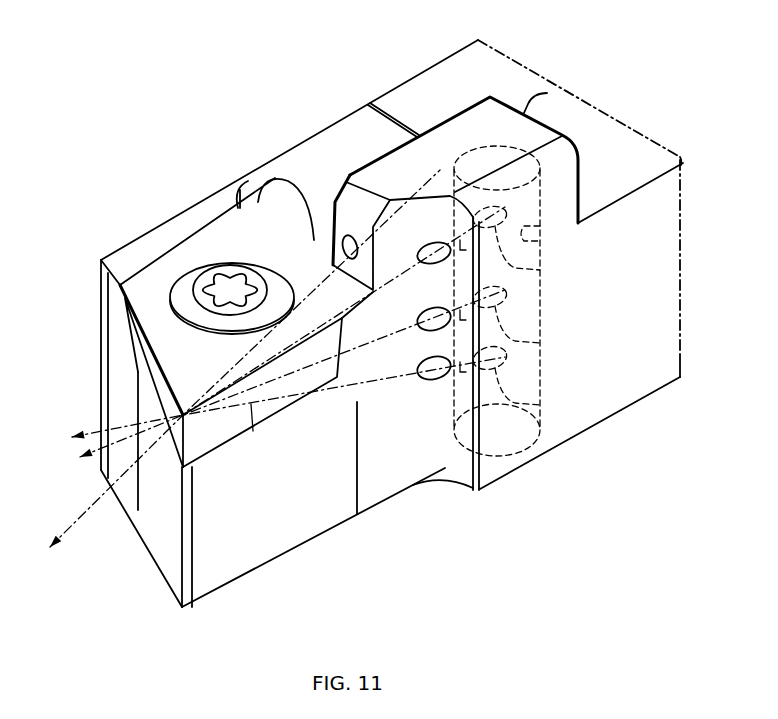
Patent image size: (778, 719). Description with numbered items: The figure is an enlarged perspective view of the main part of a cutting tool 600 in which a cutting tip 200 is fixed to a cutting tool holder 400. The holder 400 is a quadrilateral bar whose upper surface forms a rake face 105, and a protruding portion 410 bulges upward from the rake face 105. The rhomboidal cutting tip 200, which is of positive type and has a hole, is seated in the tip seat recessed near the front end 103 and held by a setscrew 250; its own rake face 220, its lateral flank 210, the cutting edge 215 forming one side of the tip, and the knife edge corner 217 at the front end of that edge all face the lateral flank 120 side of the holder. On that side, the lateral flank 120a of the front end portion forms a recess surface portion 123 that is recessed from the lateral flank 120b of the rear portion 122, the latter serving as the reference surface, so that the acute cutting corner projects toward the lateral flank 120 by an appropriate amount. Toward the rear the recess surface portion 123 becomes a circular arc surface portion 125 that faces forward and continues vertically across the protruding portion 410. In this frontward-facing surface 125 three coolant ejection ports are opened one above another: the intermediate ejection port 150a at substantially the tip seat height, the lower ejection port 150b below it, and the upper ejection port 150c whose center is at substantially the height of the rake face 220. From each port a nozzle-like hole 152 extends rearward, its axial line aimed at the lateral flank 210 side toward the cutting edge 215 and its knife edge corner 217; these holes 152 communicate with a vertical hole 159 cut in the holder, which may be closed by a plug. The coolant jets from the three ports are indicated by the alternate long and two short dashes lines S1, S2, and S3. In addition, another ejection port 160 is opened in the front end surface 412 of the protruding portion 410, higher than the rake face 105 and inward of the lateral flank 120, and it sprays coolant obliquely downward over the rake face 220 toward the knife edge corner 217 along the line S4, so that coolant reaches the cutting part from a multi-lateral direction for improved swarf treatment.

The cutting tool 600 is at (138, 124).
The cutting tool holder 400 is at (430, 68).
The protruding portion 410 is at (547, 93).
The rake face 105 is at (350, 135).
The front end surface 412 is at (338, 222).
The circular arc surface portion 125 is at (452, 200).
The upper ejection port 150c is at (397, 250).
The cutting tip 200 is at (170, 278).
The setscrew 250 is at (235, 260).
The ejection port 160 is at (343, 248).
The rake face 220 is at (172, 356).
The cutting edge 215 is at (222, 380).
The knife edge corner 217 is at (178, 403).
The vertical hole 159 is at (542, 242).
The nozzle-like hole 152 is at (540, 270).
The rear portion 122 is at (677, 270).
The lateral flank 120 is at (638, 400).
The lateral flank of the rear portion 120b is at (563, 441).
The lateral flank of the front end portion 120a is at (227, 562).
The recess surface portion 123 is at (303, 520).
The front end 103 is at (173, 558).
The lateral flank 210 is at (222, 432).
The intermediate ejection port 150a is at (417, 330).
The lower ejection port 150b is at (430, 383).
The alternate long and two short dashes line S1 is at (311, 358).
The alternate long and two short dashes line S2 is at (258, 431).
The alternate long and two short dashes line S3 is at (395, 279).
The alternate long and two short dashes line S4 is at (85, 505).